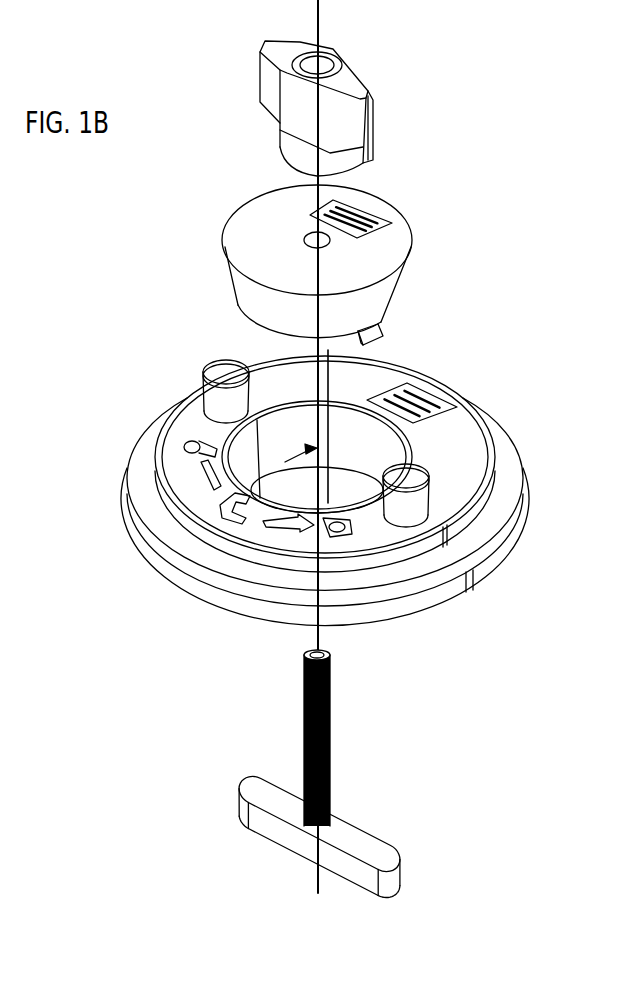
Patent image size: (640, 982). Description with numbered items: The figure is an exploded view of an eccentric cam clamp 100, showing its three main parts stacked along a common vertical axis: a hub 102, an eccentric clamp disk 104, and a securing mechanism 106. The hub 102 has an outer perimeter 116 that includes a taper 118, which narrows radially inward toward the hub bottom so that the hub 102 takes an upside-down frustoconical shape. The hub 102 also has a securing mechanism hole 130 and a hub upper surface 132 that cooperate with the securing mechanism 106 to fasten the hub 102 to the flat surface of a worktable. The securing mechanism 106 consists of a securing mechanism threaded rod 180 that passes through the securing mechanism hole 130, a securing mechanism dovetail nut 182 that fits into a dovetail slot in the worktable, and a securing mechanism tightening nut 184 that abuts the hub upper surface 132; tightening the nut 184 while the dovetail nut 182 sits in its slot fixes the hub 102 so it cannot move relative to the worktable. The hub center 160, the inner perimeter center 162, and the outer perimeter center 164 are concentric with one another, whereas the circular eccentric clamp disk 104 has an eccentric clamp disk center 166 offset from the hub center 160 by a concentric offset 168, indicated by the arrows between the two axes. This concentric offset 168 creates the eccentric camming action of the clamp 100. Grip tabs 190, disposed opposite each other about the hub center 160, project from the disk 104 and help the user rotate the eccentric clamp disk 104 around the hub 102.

The eccentric cam clamp 100 is at (113, 301).
The hub 102 is at (383, 256).
The eccentric clamp disk 104 is at (352, 492).
The securing mechanism 106 is at (211, 128).
The outer perimeter 116 is at (247, 290).
The taper 118 is at (282, 324).
The securing mechanism hole 130 is at (304, 235).
The hub upper surface 132 is at (390, 247).
The hub center 160 is at (322, 259).
The inner perimeter center 162 is at (412, 403).
The outer perimeter center 164 is at (268, 489).
The eccentric clamp disk center 166 is at (328, 393).
The concentric offset 168 is at (340, 437).
The securing mechanism threaded rod 180 is at (332, 723).
The securing mechanism dovetail nut 182 is at (393, 862).
The securing mechanism tightening nut 184 is at (363, 90).
The grip tabs 190 is at (220, 398).